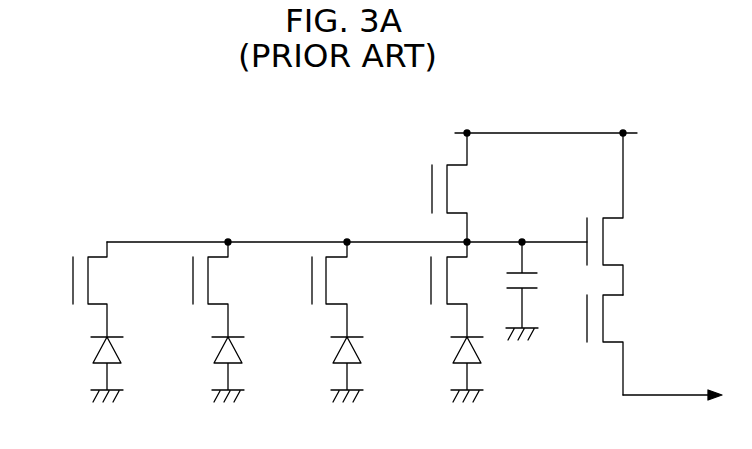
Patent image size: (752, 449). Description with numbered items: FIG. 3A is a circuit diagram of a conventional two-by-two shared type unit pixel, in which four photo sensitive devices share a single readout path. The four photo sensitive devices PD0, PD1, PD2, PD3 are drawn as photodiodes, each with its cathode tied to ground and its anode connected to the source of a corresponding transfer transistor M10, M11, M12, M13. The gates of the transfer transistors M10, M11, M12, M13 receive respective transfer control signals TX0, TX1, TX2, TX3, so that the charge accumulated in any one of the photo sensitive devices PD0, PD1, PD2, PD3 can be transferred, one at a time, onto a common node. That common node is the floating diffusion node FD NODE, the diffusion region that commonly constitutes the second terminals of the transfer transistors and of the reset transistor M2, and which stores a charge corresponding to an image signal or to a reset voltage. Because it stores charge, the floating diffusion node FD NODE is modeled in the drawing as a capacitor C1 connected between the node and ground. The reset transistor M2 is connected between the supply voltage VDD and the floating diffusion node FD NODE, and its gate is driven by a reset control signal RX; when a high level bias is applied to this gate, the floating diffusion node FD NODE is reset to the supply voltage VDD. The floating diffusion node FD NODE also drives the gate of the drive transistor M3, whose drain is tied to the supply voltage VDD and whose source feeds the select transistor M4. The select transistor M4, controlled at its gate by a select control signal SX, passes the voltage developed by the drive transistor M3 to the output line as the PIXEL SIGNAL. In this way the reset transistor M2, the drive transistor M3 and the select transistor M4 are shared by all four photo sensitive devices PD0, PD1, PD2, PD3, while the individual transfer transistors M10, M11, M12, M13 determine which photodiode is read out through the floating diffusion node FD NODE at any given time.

The transfer transistor M10 is at (104, 289).
The transfer transistor M11 is at (224, 289).
The transfer transistor M12 is at (342, 289).
The transfer transistor M13 is at (462, 289).
The transfer control signal TX0 is at (73, 282).
The transfer control signal TX1 is at (193, 282).
The transfer control signal TX2 is at (312, 282).
The transfer control signal TX3 is at (431, 282).
The photodiode PD0 is at (93, 369).
The photodiode PD1 is at (213, 369).
The photodiode PD2 is at (331, 369).
The photo sensitive device PD3 is at (451, 369).
The reset transistor M2 is at (457, 187).
The reset control signal RX is at (432, 190).
The capacitor of the floating diffusion node C1 is at (533, 291).
The floating diffusion node FD NODE is at (347, 230).
The supply voltage VDD is at (527, 133).
The drive transistor M3 is at (613, 214).
The select transistor M4 is at (613, 345).
The selection control signal SX is at (587, 320).
The pixel output signal PIXEL SIGNAL is at (680, 384).